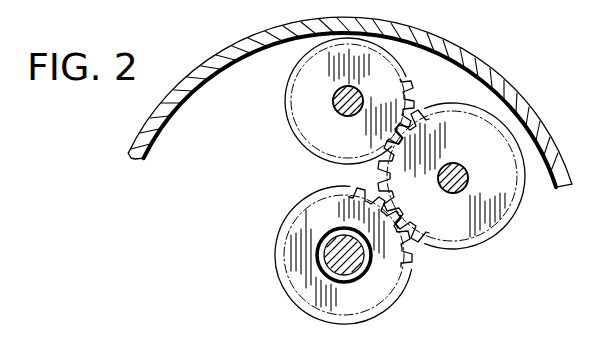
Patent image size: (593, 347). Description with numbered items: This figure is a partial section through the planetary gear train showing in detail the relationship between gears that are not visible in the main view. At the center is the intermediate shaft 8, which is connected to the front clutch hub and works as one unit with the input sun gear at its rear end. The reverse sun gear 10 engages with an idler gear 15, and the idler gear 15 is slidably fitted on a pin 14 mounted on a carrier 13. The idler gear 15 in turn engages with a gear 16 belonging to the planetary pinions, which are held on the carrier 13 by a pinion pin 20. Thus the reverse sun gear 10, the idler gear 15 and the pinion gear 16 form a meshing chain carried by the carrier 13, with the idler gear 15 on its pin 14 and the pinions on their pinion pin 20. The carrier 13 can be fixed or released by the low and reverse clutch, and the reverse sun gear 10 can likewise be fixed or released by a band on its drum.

The carrier 13 is at (476, 64).
The gear 16 is at (402, 78).
The pinion pin 20 is at (334, 102).
The pin 14 is at (464, 172).
The idler gear 15 is at (451, 238).
The intermediate shaft 8 is at (326, 232).
The reverse sun gear 10 is at (373, 293).